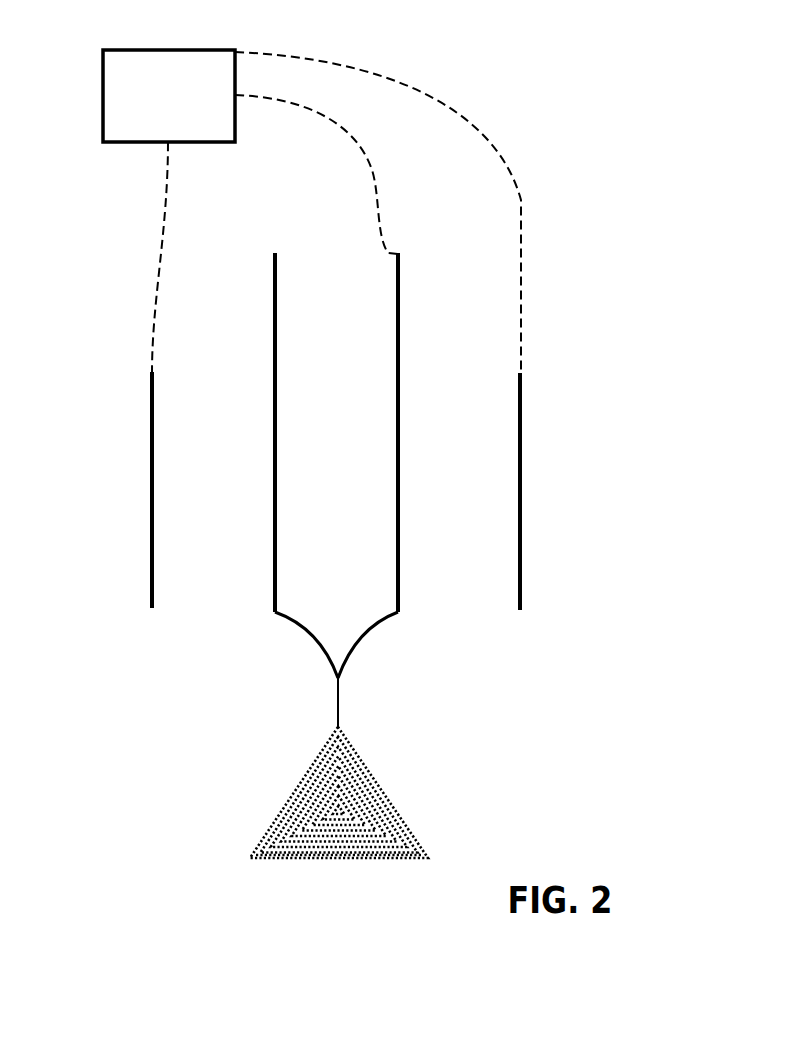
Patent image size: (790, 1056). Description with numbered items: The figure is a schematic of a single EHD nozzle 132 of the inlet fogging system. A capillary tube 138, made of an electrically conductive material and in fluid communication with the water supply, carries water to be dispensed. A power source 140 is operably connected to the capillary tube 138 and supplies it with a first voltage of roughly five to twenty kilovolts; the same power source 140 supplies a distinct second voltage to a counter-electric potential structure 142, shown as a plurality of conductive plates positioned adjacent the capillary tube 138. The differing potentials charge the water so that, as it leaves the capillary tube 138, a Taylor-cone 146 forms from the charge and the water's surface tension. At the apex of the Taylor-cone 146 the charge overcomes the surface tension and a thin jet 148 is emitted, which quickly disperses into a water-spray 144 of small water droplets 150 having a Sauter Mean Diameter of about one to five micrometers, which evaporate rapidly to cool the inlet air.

The EHD nozzle 132 is at (568, 204).
The capillary tube 138 is at (402, 390).
The power source 140 is at (149, 105).
The counter-electric potential structure 142 is at (150, 508).
The water-spray 144 is at (250, 822).
The Taylor-cone 146 is at (313, 640).
The thin jet 148 is at (345, 703).
The water droplets 150 is at (333, 845).